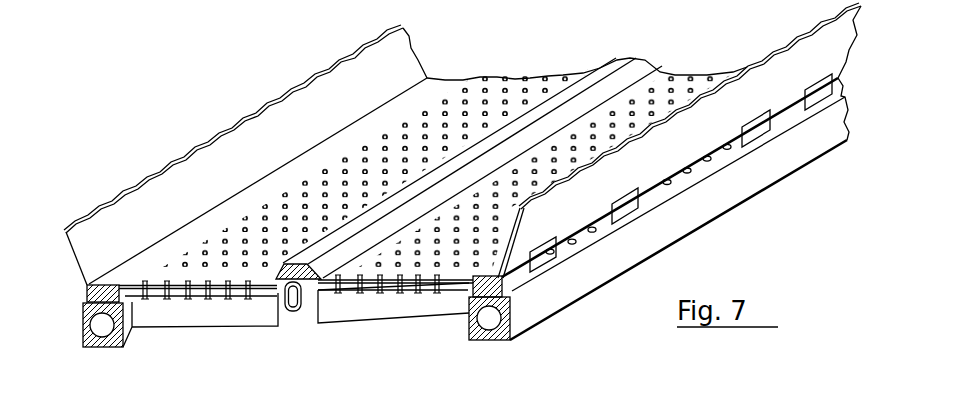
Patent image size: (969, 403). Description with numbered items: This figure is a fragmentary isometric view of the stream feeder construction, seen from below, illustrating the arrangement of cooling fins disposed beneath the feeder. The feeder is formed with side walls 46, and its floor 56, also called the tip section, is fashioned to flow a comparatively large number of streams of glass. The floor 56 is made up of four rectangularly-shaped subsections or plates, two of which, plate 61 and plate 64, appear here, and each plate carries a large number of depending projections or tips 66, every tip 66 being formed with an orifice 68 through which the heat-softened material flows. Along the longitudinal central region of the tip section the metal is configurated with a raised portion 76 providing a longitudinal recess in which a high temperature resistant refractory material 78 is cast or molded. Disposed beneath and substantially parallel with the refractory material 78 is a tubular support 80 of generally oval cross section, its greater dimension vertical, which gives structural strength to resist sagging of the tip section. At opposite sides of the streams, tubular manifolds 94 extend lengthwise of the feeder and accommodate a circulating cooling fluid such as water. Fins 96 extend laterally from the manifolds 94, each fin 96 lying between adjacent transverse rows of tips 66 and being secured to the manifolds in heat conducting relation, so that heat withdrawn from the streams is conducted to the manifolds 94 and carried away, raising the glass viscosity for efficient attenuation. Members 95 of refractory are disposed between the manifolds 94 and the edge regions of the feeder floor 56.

The side walls 46 is at (325, 90).
The floor 56 is at (434, 93).
The subsection or plate 61 is at (395, 148).
The subsection or plate 64 is at (603, 135).
The depending projections or tips 66 is at (383, 294).
The orifice 68 is at (503, 113).
The raised portion 76 is at (607, 72).
The refractory material 78 is at (279, 284).
The tubular support 80 is at (290, 313).
The manifolds 94 is at (83, 337).
The refractory members 95 is at (88, 294).
The fins 96 is at (170, 317).